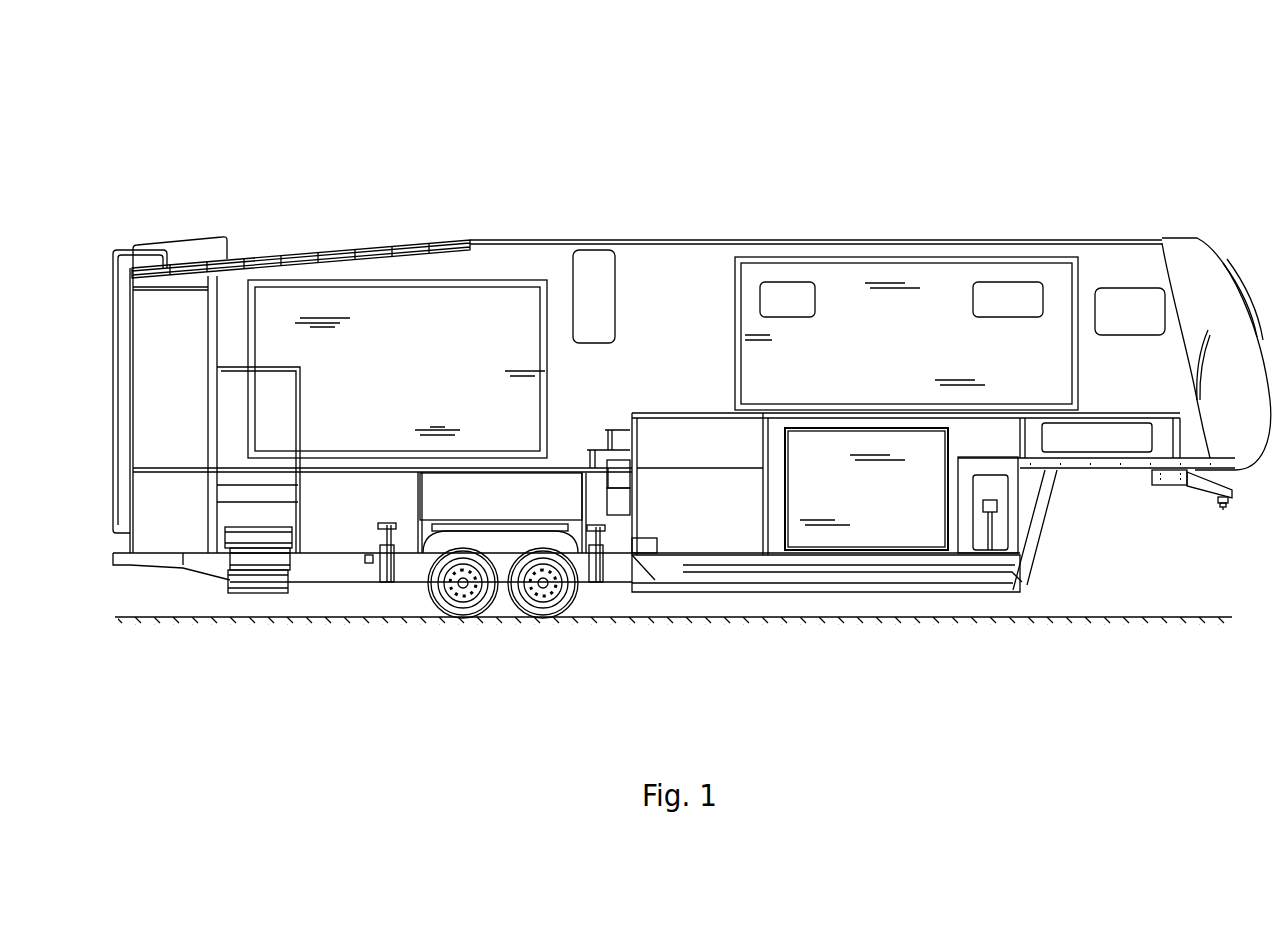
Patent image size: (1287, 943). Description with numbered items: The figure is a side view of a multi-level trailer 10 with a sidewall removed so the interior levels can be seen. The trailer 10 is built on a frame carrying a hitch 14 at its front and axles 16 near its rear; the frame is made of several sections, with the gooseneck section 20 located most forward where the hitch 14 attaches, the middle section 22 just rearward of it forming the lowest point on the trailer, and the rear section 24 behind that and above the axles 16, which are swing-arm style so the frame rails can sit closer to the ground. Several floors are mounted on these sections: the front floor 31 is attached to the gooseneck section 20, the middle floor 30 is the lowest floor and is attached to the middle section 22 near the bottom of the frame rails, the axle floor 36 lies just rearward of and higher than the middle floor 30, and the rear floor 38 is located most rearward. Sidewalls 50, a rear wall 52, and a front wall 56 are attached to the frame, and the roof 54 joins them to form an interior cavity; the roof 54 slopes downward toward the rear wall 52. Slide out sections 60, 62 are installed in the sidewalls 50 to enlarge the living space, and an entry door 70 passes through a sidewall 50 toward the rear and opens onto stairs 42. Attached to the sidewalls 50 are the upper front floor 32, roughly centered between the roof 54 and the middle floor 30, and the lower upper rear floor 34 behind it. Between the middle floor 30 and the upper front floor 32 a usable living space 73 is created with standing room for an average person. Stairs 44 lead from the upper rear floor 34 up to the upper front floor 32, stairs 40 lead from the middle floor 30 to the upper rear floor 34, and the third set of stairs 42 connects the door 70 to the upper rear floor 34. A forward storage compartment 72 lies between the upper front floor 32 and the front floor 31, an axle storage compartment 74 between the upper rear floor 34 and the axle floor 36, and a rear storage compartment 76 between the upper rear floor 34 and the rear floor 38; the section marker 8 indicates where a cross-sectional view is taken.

The multi-level trailer 10 is at (834, 126).
The section line 8 is at (695, 475).
The hitch 14 is at (1223, 508).
The axles 16 is at (543, 590).
The gooseneck section 20 is at (1128, 500).
The middle section 22 is at (858, 604).
The rear section 24 is at (332, 598).
The middle floor 30 is at (893, 585).
The front floor 31 is at (988, 456).
The upper front floor 32 is at (690, 412).
The upper rear floor 34 is at (457, 470).
The axle floor 36 is at (535, 510).
The rear floor 38 is at (165, 553).
The stairs 40 is at (620, 507).
The stairs 42 is at (282, 497).
The stairs 44 is at (597, 450).
The sidewalls 50 is at (687, 300).
The rear wall 52 is at (128, 298).
The roof 54 is at (637, 238).
The front wall 56 is at (1212, 267).
The slide out section 60 is at (460, 342).
The slide out section 62 is at (925, 358).
The entry door 70 is at (300, 385).
The forward storage compartment 72 is at (1088, 438).
The living space 73 is at (748, 533).
The axle storage compartment 74 is at (493, 518).
The rear storage compartment 76 is at (360, 518).